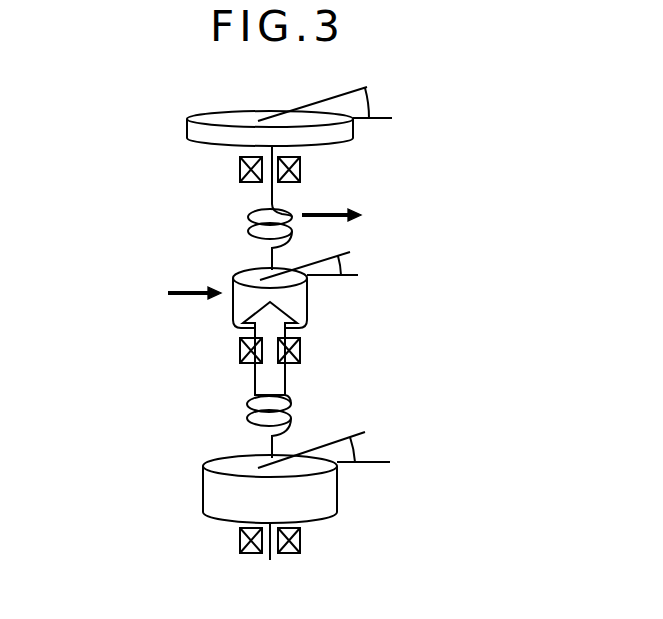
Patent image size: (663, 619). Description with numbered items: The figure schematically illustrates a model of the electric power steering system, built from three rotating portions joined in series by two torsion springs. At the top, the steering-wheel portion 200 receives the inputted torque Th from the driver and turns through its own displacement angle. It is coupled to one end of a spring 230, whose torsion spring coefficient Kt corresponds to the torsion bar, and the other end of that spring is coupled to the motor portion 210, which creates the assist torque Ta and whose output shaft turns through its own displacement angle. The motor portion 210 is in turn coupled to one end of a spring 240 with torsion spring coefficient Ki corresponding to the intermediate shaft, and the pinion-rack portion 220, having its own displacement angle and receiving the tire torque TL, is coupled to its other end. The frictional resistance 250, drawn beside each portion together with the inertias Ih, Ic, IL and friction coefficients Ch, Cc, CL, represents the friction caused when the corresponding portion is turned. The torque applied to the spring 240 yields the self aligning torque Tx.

The steering-wheel portion 200 is at (345, 127).
The motor portion 210 is at (308, 295).
The pinion-rack portion 220 is at (338, 487).
The spring 230 is at (248, 231).
The spring 240 is at (293, 397).
The frictional resistance 250 is at (300, 160).